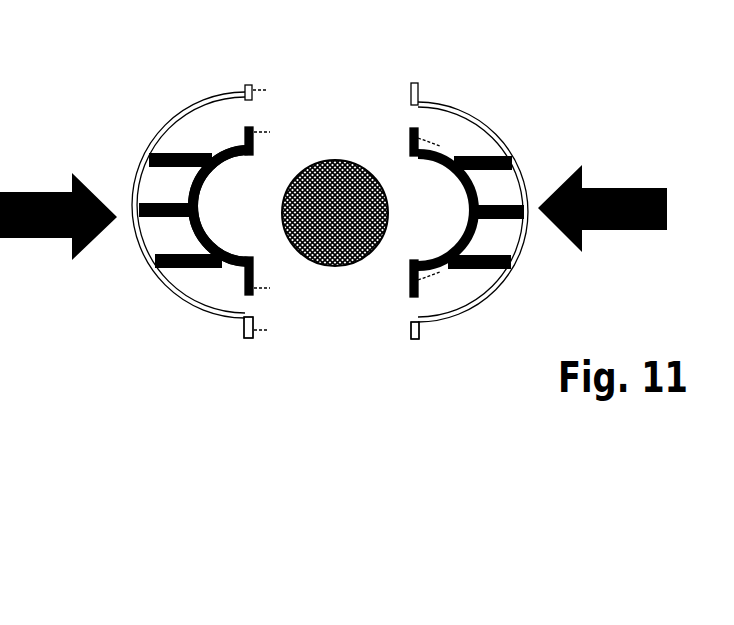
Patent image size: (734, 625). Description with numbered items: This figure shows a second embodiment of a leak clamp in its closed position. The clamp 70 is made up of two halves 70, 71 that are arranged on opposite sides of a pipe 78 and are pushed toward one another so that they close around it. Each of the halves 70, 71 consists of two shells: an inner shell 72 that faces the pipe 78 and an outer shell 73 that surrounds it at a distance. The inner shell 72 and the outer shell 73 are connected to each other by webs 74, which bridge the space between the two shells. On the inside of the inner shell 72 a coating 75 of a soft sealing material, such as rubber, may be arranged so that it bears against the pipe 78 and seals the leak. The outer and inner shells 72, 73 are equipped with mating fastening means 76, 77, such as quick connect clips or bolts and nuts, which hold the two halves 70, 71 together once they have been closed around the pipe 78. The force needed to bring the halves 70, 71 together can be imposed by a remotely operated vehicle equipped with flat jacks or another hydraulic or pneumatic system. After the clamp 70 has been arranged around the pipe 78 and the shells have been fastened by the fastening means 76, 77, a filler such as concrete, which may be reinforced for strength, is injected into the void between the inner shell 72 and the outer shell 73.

The clamp 70 is at (225, 292).
The clamp half 71 is at (538, 324).
The inner shell 72 is at (217, 274).
The outer shell 73 is at (176, 299).
The webs 74 is at (152, 253).
The coating 75 is at (199, 214).
The fastening means 76 is at (258, 336).
The fastening means 77 is at (420, 334).
The pipe 78 is at (326, 158).